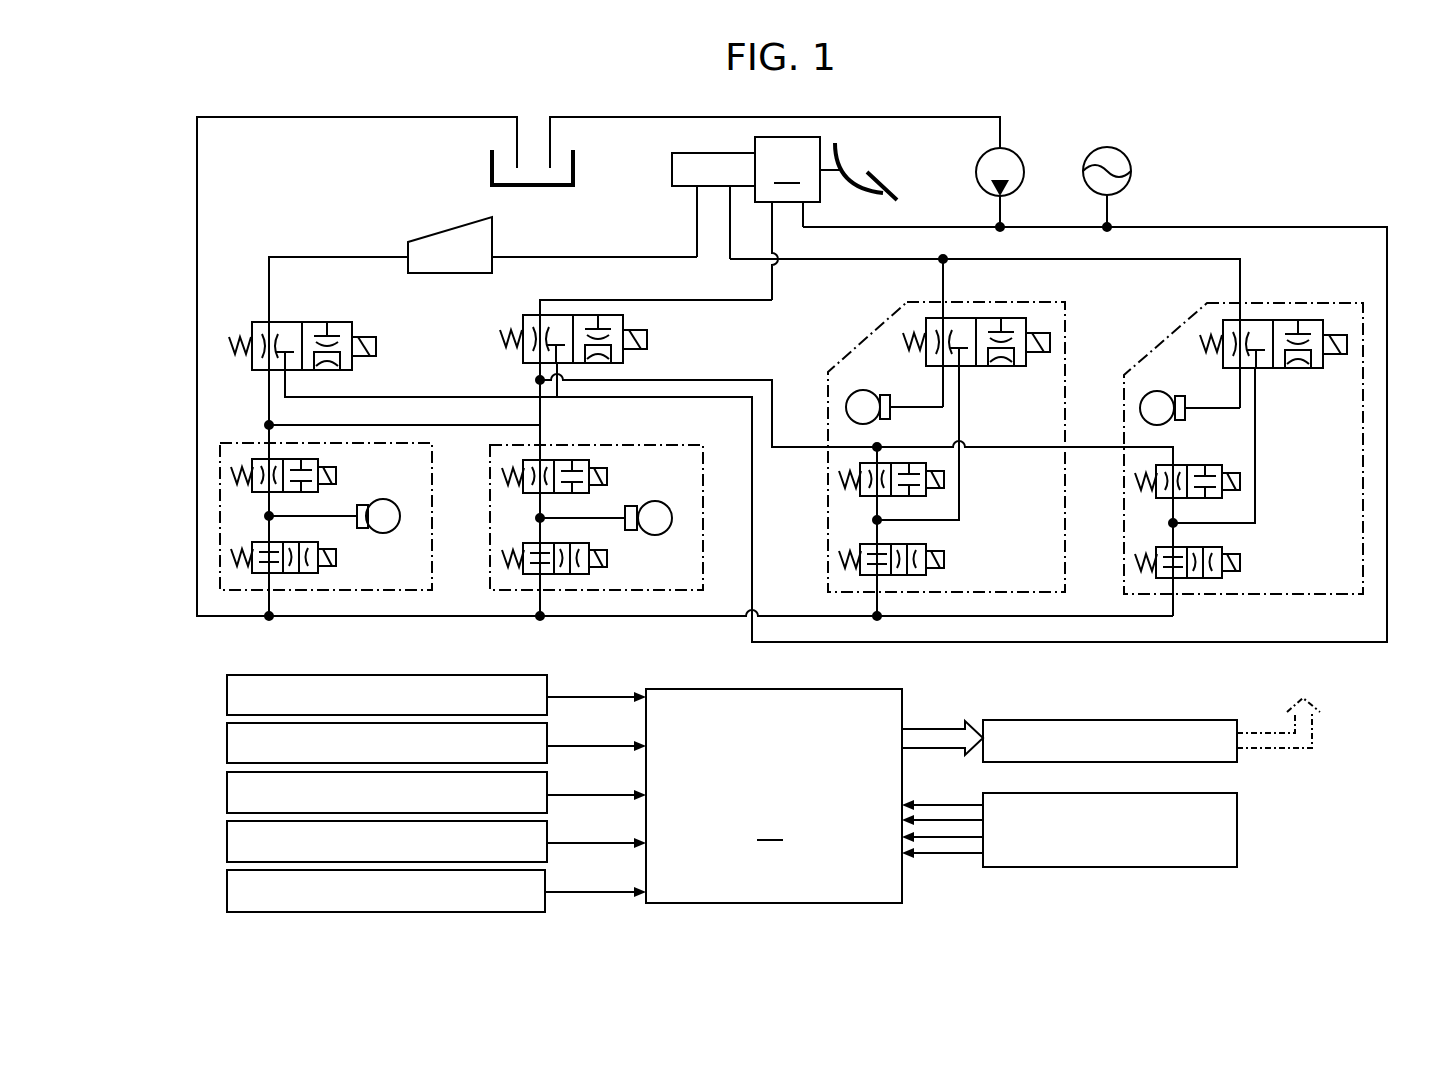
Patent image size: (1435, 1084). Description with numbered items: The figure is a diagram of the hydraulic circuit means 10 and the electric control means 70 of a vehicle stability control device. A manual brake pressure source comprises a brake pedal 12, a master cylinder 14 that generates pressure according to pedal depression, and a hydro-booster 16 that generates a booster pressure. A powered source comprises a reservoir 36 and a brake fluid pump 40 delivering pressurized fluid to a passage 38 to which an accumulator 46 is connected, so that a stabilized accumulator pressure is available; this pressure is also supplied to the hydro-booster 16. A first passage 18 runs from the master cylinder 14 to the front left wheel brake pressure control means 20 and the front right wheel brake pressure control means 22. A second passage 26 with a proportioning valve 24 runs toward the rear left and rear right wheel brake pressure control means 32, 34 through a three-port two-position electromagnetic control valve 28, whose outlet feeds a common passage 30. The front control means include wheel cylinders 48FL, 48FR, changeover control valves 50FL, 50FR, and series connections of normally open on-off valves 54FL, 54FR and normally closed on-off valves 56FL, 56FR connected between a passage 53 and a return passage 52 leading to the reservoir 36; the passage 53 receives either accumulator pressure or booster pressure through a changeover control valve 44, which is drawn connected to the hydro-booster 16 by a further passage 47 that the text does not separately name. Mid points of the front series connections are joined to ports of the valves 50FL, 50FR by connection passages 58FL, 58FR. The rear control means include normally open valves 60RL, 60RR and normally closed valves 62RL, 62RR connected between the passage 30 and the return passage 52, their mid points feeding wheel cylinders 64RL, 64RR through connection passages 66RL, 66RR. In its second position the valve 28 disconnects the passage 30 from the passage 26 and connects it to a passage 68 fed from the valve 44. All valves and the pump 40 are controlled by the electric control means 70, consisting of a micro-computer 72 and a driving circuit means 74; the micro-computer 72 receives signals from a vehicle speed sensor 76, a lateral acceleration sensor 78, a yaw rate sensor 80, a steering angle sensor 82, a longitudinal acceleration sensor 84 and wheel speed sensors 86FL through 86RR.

The hydraulic circuit means 10 is at (183, 178).
The brake pedal 12 is at (872, 192).
The master cylinder 14 is at (690, 153).
The hydro-booster 16 is at (787, 218).
The first passage 18 is at (800, 262).
The front left wheel brake pressure control means 20 is at (877, 325).
The front right wheel brake pressure control means 22 is at (1155, 332).
The proportioning valve 24 is at (428, 238).
The second passage 26 is at (295, 257).
The changeover type electromagnetic control valve 28 is at (287, 322).
The common passage 30 is at (269, 412).
The rear left wheel brake pressure control means 32 is at (238, 440).
The rear right wheel brake pressure control means 34 is at (572, 594).
The reservoir 36 is at (490, 175).
The passage 38 is at (1267, 227).
The brake fluid pump 40 is at (1024, 172).
The changeover control valve 44 is at (583, 315).
The accumulator 46 is at (1132, 170).
The conduit 47 is at (687, 300).
The front left wheel cylinder 48FL is at (868, 421).
The front right wheel cylinder 48FR is at (1163, 423).
The changeover type electromagnetic control valve 50FL is at (985, 318).
The changeover type electromagnetic control valve 50FR is at (1255, 320).
The return passage 52 is at (795, 613).
The passage 53 is at (747, 378).
The normally open type electromagnetic on-off valve 54FL is at (913, 497).
The normally open type electromagnetic on-off valve 54FR is at (1212, 497).
The normally closed type electromagnetic on-off valve 56FL is at (915, 546).
The normally closed type electromagnetic on-off valve 56FR is at (1213, 548).
The connection passage 58FL is at (962, 395).
The connection passage 58FR is at (1258, 398).
The normally open type electromagnetic on-off valve 60RL is at (260, 492).
The normally open type electromagnetic on-off valve 60RR is at (567, 460).
The normally closed type electromagnetic on-off valve 62RL is at (262, 573).
The normally closed type electromagnetic on-off valve 62RR is at (532, 573).
The rear left wheel cylinder 64RL is at (383, 533).
The rear right wheel cylinder 64RR is at (655, 535).
The connection passage 66RL is at (345, 532).
The connection passage 66RR is at (614, 530).
The passage 68 is at (418, 395).
The electric control means 70 is at (1360, 757).
The micro-computer 72 is at (837, 796).
The driving circuit means 74 is at (1180, 763).
The vehicle speed sensor 76 is at (227, 695).
The lateral acceleration sensor 78 is at (227, 744).
The yaw rate sensor 80 is at (227, 793).
The steering angle sensor 82 is at (227, 842).
The longitudinal acceleration sensor 84 is at (227, 890).
The wheel speed sensor 86FL is at (1203, 830).
The wheel speed sensor 86RR is at (1237, 828).